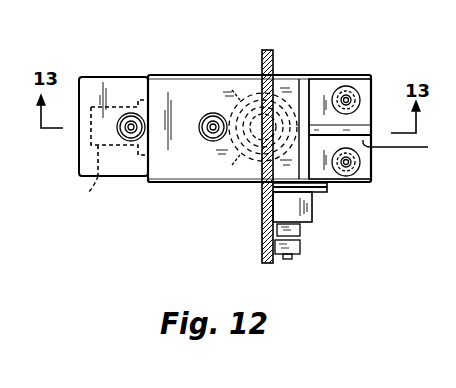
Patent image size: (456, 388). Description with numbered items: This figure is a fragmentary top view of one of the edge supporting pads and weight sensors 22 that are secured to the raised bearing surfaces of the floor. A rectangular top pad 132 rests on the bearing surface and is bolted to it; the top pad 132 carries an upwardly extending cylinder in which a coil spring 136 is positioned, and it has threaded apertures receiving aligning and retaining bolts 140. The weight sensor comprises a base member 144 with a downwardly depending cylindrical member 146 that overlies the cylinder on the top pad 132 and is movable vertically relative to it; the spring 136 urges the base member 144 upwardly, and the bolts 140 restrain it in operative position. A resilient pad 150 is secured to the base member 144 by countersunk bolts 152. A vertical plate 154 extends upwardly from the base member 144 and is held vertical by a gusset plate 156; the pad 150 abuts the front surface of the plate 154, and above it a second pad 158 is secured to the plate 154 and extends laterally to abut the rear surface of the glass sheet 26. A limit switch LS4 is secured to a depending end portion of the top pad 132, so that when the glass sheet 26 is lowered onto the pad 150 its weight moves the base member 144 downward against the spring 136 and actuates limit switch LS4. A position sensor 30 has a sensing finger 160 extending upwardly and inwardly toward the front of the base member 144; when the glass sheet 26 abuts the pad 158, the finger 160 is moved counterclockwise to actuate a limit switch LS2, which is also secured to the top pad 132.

The edge supporting pad and weight sensor 22 is at (131, 74).
The glass sheet 26 is at (261, 56).
The cylindrical member 146 is at (235, 74).
The second pad 158 is at (286, 84).
The coil spring 136 is at (312, 78).
The top pad 132 is at (357, 77).
The gusset plate 156 is at (409, 151).
The aligning and retaining bolts 140 is at (361, 162).
The base member 144 is at (371, 182).
The vertical plate 154 is at (311, 162).
The countersunk bolts 152 is at (126, 141).
The resilient pad 150 is at (170, 165).
The sensing finger 160 is at (276, 260).
The position sensor 30 is at (303, 247).
The limit switch LS2 is at (312, 218).
The limit switch LS4 is at (72, 192).